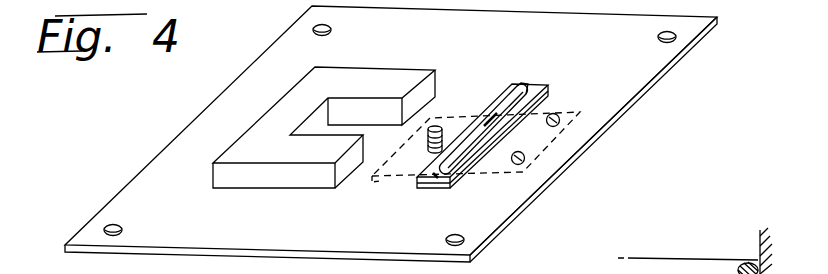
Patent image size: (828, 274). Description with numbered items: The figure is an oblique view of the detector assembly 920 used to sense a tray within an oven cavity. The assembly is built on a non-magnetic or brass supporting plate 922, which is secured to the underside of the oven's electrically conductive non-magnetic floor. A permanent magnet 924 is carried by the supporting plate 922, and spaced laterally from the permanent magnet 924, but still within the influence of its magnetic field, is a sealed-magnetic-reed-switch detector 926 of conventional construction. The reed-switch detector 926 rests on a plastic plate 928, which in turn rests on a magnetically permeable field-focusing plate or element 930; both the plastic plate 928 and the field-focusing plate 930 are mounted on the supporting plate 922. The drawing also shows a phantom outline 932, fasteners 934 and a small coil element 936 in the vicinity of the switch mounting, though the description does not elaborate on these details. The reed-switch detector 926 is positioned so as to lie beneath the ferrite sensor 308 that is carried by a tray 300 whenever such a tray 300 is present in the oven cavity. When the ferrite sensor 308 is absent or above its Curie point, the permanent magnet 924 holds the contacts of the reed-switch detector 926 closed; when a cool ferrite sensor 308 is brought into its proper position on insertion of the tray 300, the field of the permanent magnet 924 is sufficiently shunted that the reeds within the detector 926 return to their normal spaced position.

The detector assembly 920 is at (645, 100).
The supporting plate 922 is at (140, 200).
The permanent magnet 924 is at (263, 130).
The sealed-magnetic-reed-switch detector 926 is at (512, 88).
The plastic plate 928 is at (513, 83).
The field-focusing plate 930 is at (460, 176).
The phantom mounting outline 932 is at (392, 178).
The mounting screws 934 is at (525, 156).
The coil spring 936 is at (438, 127).
The tray 300 is at (688, 258).
The ferrite sensor 308 is at (663, 251).